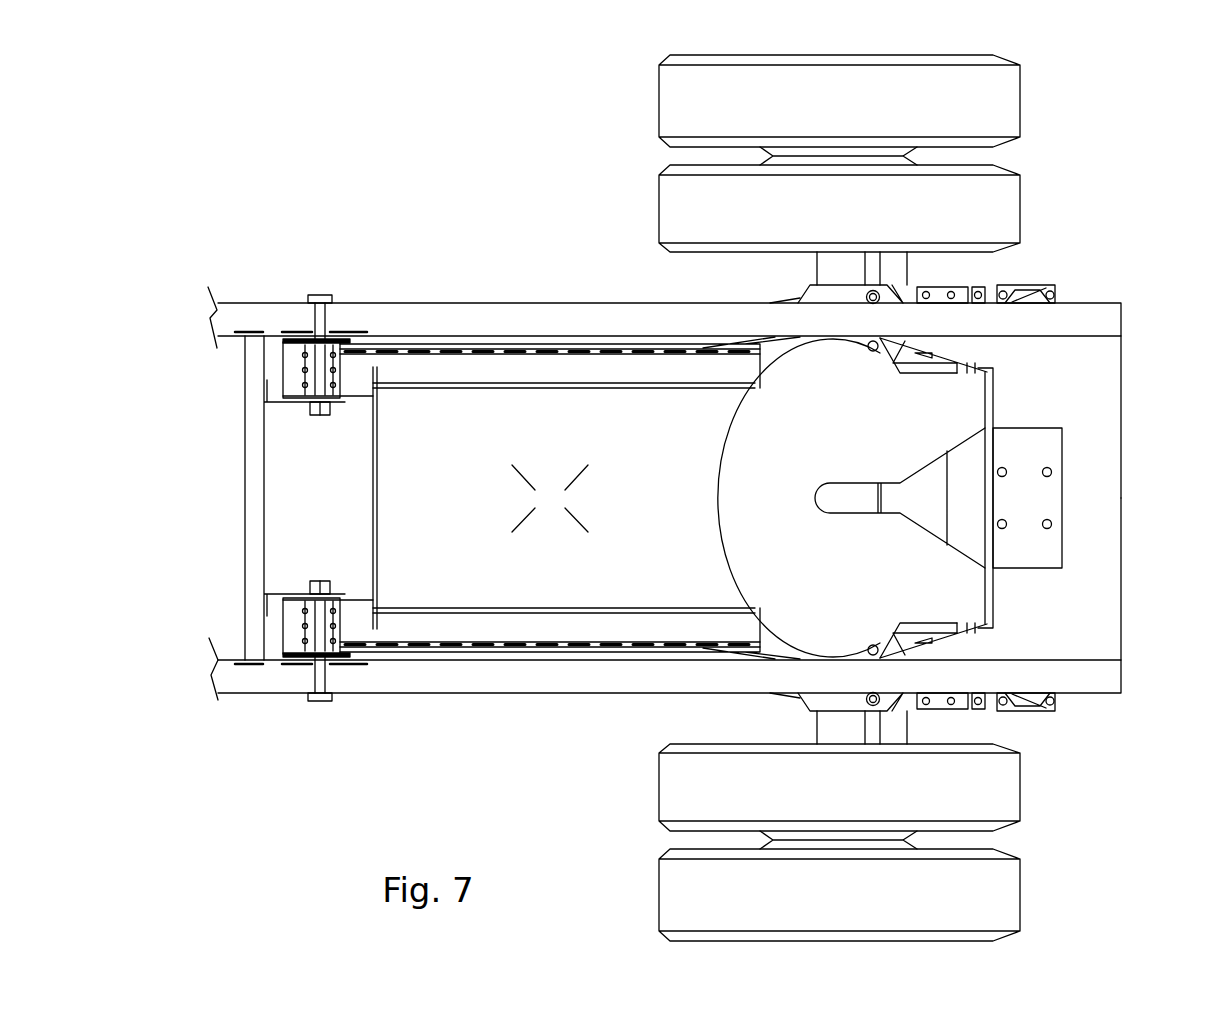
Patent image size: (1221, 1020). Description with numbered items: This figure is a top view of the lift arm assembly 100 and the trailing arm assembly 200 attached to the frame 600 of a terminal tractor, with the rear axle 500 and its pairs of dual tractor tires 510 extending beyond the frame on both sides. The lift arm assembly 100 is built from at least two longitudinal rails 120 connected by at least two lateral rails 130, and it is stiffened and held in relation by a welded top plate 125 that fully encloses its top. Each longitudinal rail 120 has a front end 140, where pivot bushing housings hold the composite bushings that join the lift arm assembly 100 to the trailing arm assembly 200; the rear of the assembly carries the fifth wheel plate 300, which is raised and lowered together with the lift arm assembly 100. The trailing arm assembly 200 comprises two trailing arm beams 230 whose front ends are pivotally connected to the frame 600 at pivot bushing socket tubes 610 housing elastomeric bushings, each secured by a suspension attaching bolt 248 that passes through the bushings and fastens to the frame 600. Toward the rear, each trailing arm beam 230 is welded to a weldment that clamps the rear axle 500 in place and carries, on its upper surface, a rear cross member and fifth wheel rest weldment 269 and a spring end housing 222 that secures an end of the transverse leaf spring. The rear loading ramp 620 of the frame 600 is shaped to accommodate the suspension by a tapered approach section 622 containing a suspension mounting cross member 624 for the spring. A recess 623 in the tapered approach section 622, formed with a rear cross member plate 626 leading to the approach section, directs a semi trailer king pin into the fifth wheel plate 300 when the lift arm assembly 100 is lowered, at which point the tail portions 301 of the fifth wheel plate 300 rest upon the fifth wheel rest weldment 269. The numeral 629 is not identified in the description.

The lift arm assembly 100 is at (444, 437).
The longitudinal rails 120 is at (560, 387).
The welded top plate 125 is at (550, 498).
The lateral rails 130 is at (373, 497).
The front end 140 is at (357, 364).
The trailing arm assembly 200 is at (988, 290).
The spring end housing 222 is at (1052, 290).
The trailing arm beams 230 is at (548, 343).
The suspension attaching bolt 248 is at (318, 294).
The rear cross member and fifth wheel rest weldment 269 is at (977, 500).
The fifth wheel plate 300 is at (752, 488).
The tail portions 301 is at (980, 410).
The rear axle 500 is at (823, 273).
The dual tractor tires 510 is at (1013, 200).
The frame 600 is at (512, 327).
The pivot bushing socket tubes 610 is at (310, 320).
The rear loading ramp 620 is at (930, 346).
The tapered approach section 622 is at (1113, 538).
The recess 623 is at (1058, 443).
The suspension mounting cross member 624 is at (1030, 495).
The rear cross member plate 626 is at (1113, 572).
The front end plate 629 is at (250, 497).